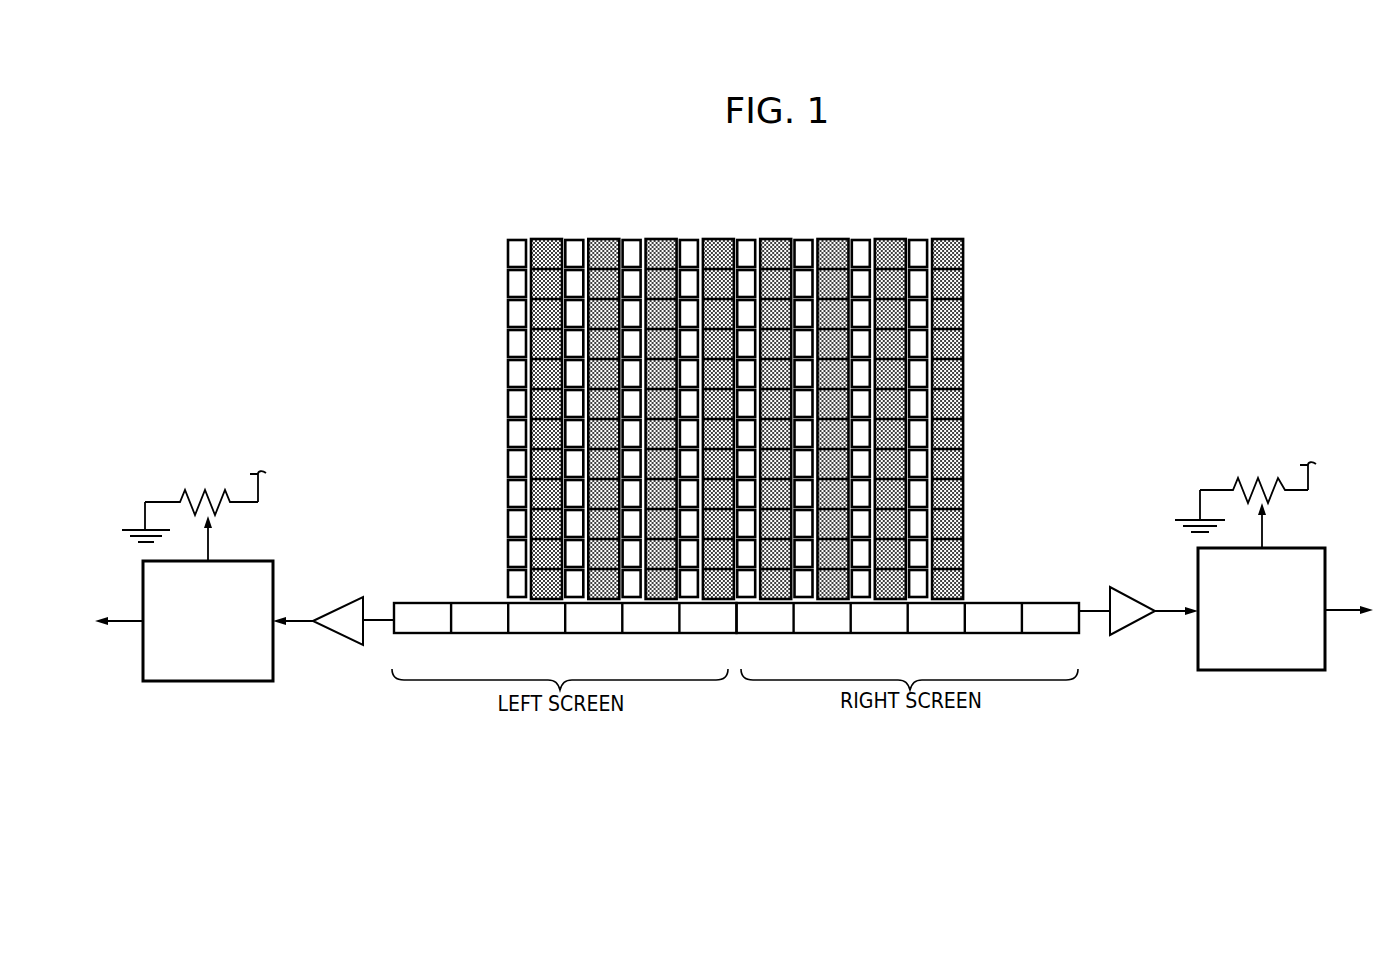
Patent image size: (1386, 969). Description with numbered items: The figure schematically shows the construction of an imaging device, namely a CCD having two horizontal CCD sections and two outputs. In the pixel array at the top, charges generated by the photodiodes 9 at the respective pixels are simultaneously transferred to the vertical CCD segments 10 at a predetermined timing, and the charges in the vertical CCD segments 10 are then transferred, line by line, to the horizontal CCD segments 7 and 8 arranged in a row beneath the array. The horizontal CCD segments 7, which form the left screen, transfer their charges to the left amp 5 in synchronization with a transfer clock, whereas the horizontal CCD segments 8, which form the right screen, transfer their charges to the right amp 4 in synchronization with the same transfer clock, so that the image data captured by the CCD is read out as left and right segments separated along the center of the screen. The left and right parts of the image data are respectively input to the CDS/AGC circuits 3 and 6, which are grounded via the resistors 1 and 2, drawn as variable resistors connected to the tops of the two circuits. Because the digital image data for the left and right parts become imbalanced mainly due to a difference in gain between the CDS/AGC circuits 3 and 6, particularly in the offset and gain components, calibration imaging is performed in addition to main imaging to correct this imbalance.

The resistor 1 is at (203, 488).
The resistor 2 is at (1254, 475).
The CDS/AGC circuit 3 is at (215, 682).
The right amp 4 is at (1137, 597).
The left amp 5 is at (339, 604).
The CDS/AGC circuit 6 is at (1270, 671).
The horizontal CCD segments 7 is at (420, 634).
The horizontal CCD segments 8 is at (765, 634).
The photodiodes 9 is at (804, 237).
The vertical CCD segments 10 is at (947, 237).